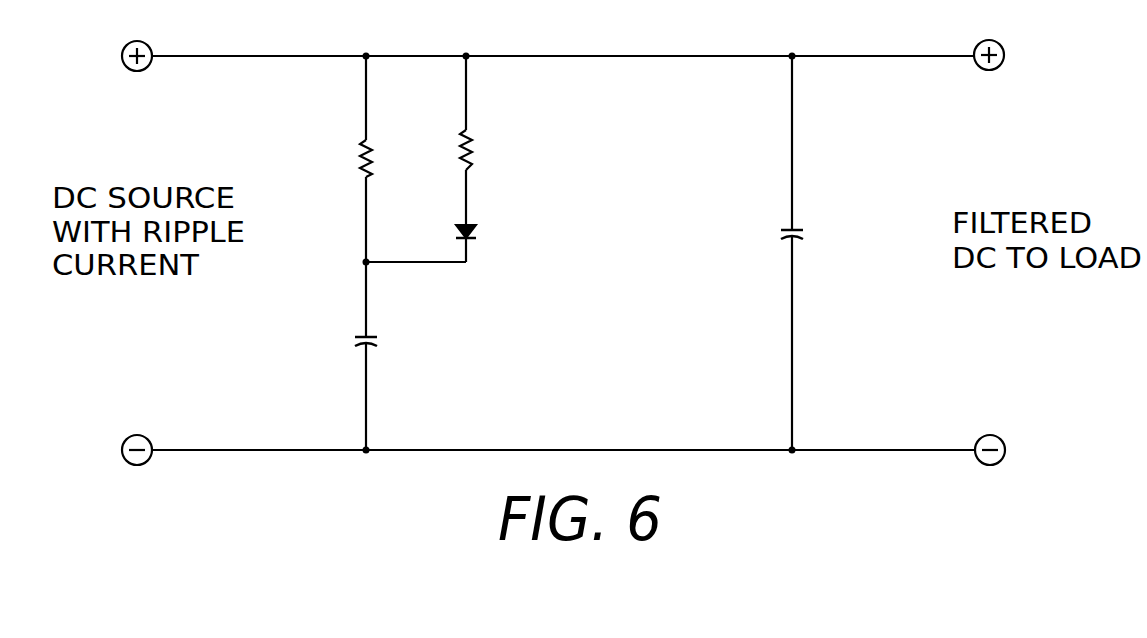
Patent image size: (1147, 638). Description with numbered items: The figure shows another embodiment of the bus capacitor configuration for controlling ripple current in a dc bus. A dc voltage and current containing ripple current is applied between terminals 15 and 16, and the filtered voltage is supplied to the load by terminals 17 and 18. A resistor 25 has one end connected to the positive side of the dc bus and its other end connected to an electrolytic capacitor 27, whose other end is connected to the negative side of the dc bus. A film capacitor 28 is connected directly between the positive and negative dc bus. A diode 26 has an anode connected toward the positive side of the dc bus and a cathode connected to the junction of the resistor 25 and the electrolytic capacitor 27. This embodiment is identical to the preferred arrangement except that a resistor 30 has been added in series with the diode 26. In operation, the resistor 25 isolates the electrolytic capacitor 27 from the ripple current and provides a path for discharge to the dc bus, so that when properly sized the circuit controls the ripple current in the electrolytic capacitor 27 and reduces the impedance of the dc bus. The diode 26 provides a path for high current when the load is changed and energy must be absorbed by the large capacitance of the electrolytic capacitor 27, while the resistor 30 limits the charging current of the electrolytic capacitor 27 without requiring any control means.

The input terminal 15 is at (151, 46).
The input terminal 16 is at (151, 443).
The output terminal 17 is at (1002, 45).
The output terminal 18 is at (1003, 440).
The resistor 25 is at (369, 140).
The diode 26 is at (472, 232).
The electrolytic capacitor 27 is at (370, 337).
The film capacitor 28 is at (797, 230).
The resistor 30 is at (469, 130).